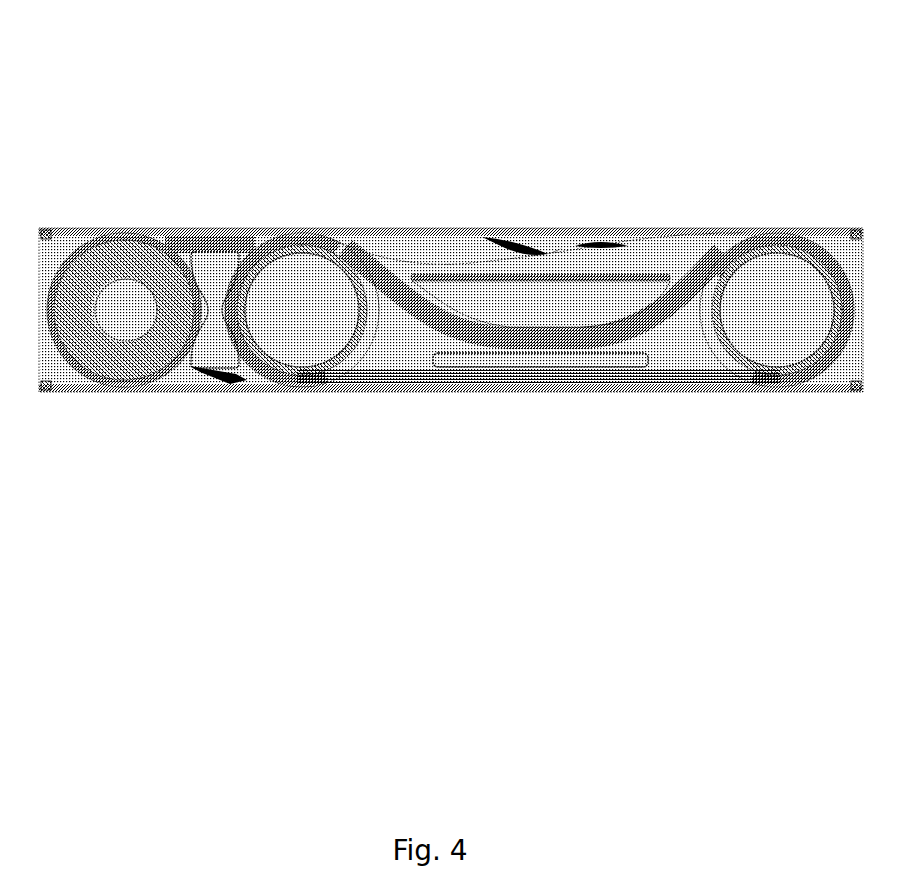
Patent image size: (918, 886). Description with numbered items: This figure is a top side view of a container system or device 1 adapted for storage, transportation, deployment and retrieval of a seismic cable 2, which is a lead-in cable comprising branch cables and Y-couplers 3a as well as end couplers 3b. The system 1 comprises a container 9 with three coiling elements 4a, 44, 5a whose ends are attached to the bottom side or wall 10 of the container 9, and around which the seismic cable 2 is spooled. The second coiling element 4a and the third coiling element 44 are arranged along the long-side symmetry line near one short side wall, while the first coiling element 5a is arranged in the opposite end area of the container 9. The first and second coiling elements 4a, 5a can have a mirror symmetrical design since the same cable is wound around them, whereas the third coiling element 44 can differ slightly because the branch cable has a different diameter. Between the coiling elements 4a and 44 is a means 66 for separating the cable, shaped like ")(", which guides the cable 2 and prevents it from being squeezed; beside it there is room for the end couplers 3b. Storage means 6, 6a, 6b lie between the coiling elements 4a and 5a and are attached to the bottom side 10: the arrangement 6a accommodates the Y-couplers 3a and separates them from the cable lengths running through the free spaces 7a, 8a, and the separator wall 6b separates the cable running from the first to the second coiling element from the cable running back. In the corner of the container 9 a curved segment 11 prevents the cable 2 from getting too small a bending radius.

The container system or device 1 is at (707, 160).
The seismic cable 2 is at (300, 240).
The Y-couplers 3a is at (529, 250).
The end couplers 3b is at (230, 372).
The second coiling element 4a is at (334, 355).
The first coiling element 5a is at (735, 347).
The storage means 6 is at (443, 353).
The arrangement of the storage means 6a is at (625, 278).
The separator element or wall 6b is at (441, 356).
The free space or room 7a is at (553, 378).
The free space or room 8a is at (592, 338).
The container 9 is at (183, 390).
The bottom side or wall 10 is at (785, 312).
The curved segment 11 is at (68, 240).
The third coiling element 44 is at (120, 338).
The means for separating the cable 66 is at (214, 252).